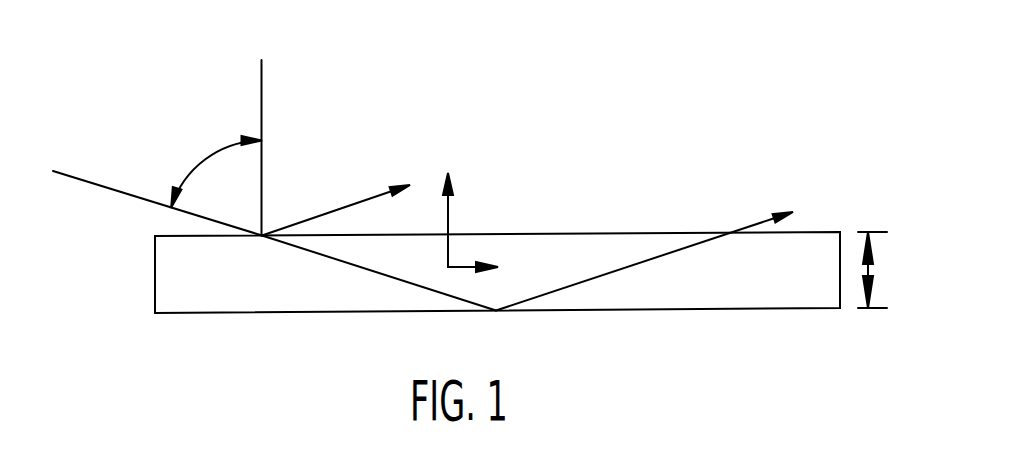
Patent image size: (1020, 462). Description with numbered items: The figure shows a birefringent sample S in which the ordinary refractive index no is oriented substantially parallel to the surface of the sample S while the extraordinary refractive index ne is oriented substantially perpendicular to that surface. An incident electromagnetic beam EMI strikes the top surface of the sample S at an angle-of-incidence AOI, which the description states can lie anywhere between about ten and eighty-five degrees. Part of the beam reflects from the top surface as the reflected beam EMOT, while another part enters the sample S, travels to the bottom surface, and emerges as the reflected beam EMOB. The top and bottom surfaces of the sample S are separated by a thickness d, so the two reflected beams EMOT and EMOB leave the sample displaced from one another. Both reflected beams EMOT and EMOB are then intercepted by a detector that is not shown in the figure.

The sample S is at (233, 312).
The incident electromagnetic beam EMI is at (62, 162).
The angle-of-incidence AOI is at (203, 160).
The electromagnetic beam reflected from top surface EMOT is at (310, 210).
The electromagnetic beam reflected from bottom surface EMOB is at (691, 233).
The extraordinary refractive index ne is at (479, 205).
The ordinary refractive index no is at (506, 272).
The thickness d is at (887, 269).